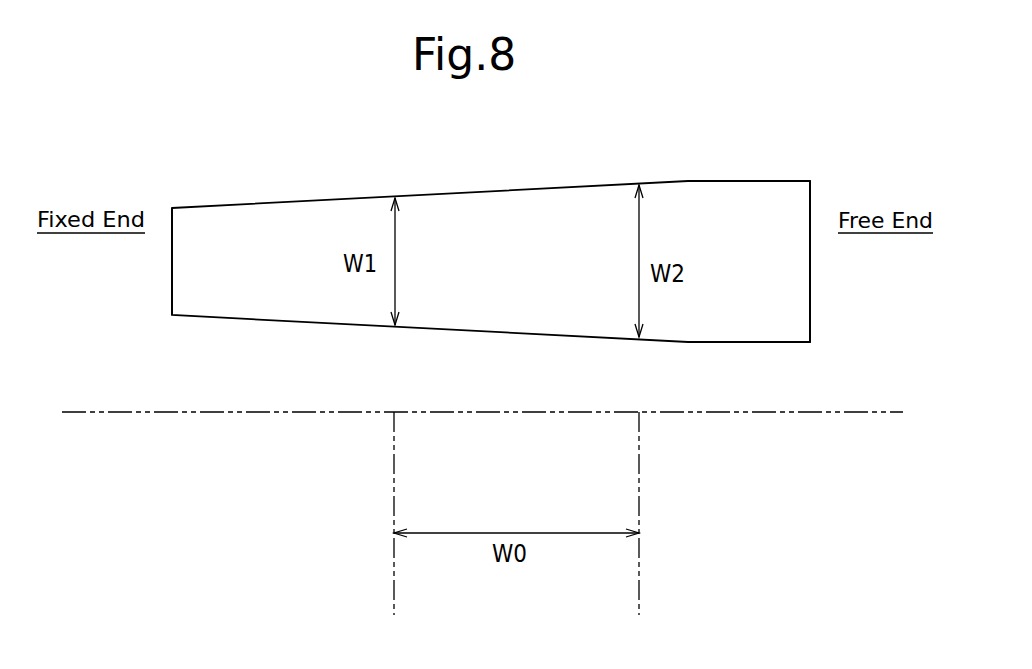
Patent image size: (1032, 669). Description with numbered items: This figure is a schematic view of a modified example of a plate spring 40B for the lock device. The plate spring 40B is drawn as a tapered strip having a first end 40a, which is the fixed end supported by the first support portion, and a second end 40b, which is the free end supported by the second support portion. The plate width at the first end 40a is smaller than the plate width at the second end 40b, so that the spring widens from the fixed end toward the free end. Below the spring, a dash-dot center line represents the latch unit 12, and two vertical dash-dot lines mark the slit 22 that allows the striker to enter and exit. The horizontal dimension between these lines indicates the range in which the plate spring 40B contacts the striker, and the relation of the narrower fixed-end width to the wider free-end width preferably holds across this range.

The plate spring 40B is at (518, 190).
The first end 40a is at (183, 258).
The second end 40b is at (788, 262).
The latch unit 12 is at (192, 412).
The slit 22 is at (397, 435).